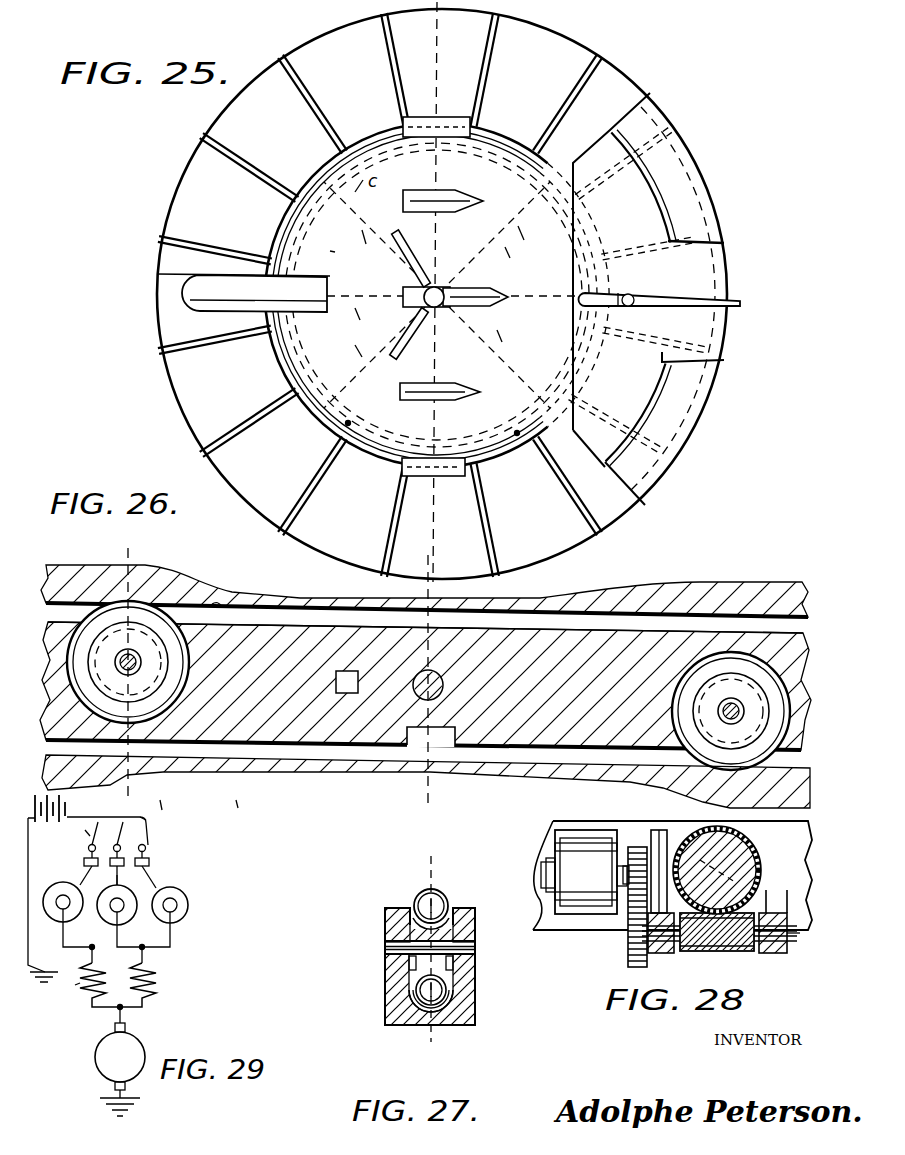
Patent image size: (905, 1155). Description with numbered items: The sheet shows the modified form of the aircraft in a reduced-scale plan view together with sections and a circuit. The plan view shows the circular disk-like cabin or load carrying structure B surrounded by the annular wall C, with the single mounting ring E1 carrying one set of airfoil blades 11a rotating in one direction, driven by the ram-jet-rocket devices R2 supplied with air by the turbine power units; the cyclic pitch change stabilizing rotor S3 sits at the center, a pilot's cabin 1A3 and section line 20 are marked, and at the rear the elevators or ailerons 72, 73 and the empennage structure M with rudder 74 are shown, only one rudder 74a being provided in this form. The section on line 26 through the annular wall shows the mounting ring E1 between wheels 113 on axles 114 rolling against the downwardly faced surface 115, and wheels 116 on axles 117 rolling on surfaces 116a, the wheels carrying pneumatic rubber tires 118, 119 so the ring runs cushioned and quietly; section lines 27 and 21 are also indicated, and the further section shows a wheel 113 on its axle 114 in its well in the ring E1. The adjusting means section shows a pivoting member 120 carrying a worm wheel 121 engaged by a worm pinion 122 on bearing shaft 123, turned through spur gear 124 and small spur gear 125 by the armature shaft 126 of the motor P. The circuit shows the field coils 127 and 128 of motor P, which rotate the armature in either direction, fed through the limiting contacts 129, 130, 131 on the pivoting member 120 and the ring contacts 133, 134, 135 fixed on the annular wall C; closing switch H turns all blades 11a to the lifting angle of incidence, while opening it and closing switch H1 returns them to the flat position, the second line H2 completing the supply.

In FIG. 25, the airfoil blade 11a is at (380, 295).
In FIG. 25, the section line 20 is at (437, 47).
In FIG. 25, the ram-jet-rocket device R2 is at (451, 124).
In FIG. 25, the vertical steering rudder 74 is at (473, 165).
In FIG. 25, the rudder 74a is at (687, 299).
In FIG. 25, the elevator or aileron 72 is at (688, 174).
In FIG. 25, the elevator or aileron 73 is at (694, 420).
In FIG. 25, the arm 1A3 is at (182, 289).
In FIG. 25, the section line 26 is at (348, 422).
In FIG. 27, the section line 26 is at (430, 876).
In FIG. 25, the annular wall C is at (300, 356).
In FIG. 26, the annular wall C is at (268, 600).
In FIG. 25, the cabin or load carrying structure B is at (329, 242).
In FIG. 25, the stabilizing rotor S3 is at (535, 242).
In FIG. 25, the rear empennage structure M is at (644, 291).
In FIG. 26, the wheel 113 is at (98, 642).
In FIG. 27, the wheel 113 is at (447, 975).
In FIG. 26, the axle 114 is at (134, 617).
In FIG. 27, the axle 114 is at (386, 947).
In FIG. 26, the downwardly faced surface 115 is at (215, 603).
In FIG. 26, the wheel 116 is at (718, 692).
In FIG. 26, the surface 116a is at (318, 770).
In FIG. 26, the axle 117 is at (718, 690).
In FIG. 26, the pneumatic rubber tire 118 is at (130, 655).
In FIG. 26, the pneumatic rubber tire 119 is at (700, 752).
In FIG. 26, the adjusting axle or pivoting member 120 is at (520, 601).
In FIG. 29, the adjusting axle or pivoting member 120 is at (175, 916).
In FIG. 26, the section line 21 is at (427, 620).
In FIG. 26, the section line 27 is at (127, 548).
In FIG. 26, the mounting ring E1 is at (425, 691).
In FIG. 27, the mounting ring E1 is at (385, 975).
In FIG. 28, the mounting ring E1 is at (550, 850).
In FIG. 29, the mounting ring E1 is at (240, 812).
In FIG. 26, the bus H2 is at (175, 806).
In FIG. 29, the bus H2 is at (148, 823).
In FIG. 29, the switch H1 is at (130, 876).
In FIG. 29, the switch H is at (80, 830).
In FIG. 28, the worm wheel 121 is at (745, 855).
In FIG. 28, the worm pinion 122 is at (770, 925).
In FIG. 28, the bearing shaft 123 is at (790, 945).
In FIG. 28, the spur gear 124 is at (647, 963).
In FIG. 28, the small spur gear 125 is at (630, 888).
In FIG. 28, the armature shaft 126 is at (533, 930).
In FIG. 28, the motor P is at (584, 872).
In FIG. 29, the motor P is at (135, 1028).
In FIG. 29, the field coil 127 is at (150, 988).
In FIG. 29, the field coil 128 is at (75, 985).
In FIG. 29, the limiting contact 129 is at (70, 882).
In FIG. 29, the limiting contact 130 is at (97, 905).
In FIG. 29, the limiting contact 131 is at (153, 892).
In FIG. 29, the ring contact 133 is at (84, 862).
In FIG. 29, the ring contact 134 is at (112, 866).
In FIG. 29, the ring contact 135 is at (150, 862).